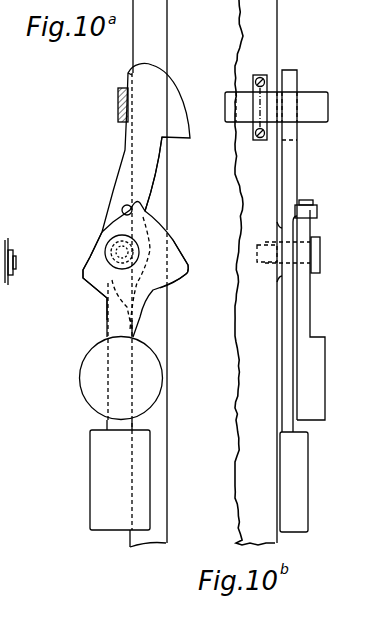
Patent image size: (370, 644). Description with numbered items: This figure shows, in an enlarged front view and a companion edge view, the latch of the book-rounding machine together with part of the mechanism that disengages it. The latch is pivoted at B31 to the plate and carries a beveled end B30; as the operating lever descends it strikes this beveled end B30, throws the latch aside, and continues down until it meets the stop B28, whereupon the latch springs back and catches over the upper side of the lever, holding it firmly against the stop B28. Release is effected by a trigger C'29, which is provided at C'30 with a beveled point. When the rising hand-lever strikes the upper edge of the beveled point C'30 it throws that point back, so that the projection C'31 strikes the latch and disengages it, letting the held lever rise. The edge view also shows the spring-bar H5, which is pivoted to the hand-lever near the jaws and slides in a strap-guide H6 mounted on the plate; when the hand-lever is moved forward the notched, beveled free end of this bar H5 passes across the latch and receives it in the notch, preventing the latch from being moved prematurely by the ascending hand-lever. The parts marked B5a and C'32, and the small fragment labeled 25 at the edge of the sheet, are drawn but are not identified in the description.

In FIG. 10A, the cam plate B5a is at (136, 200).
In FIG. 10A, the roller pin C'32 is at (103, 207).
In FIG. 10A, the projection C'31 is at (166, 176).
In FIG. 10A, the pivot B31 is at (116, 253).
In FIG. 10A, the beveled point C'30 is at (191, 264).
In FIG. 10A, the trigger C'29 is at (91, 276).
In FIG. 10A, the bracket fragment 25 is at (8, 254).
In FIG. 10B, the strap-guide H6 is at (260, 78).
In FIG. 10B, the beveled end B30 is at (292, 78).
In FIG. 10B, the spring-bar H5 is at (276, 107).
In FIG. 10B, the stop B28 is at (288, 178).